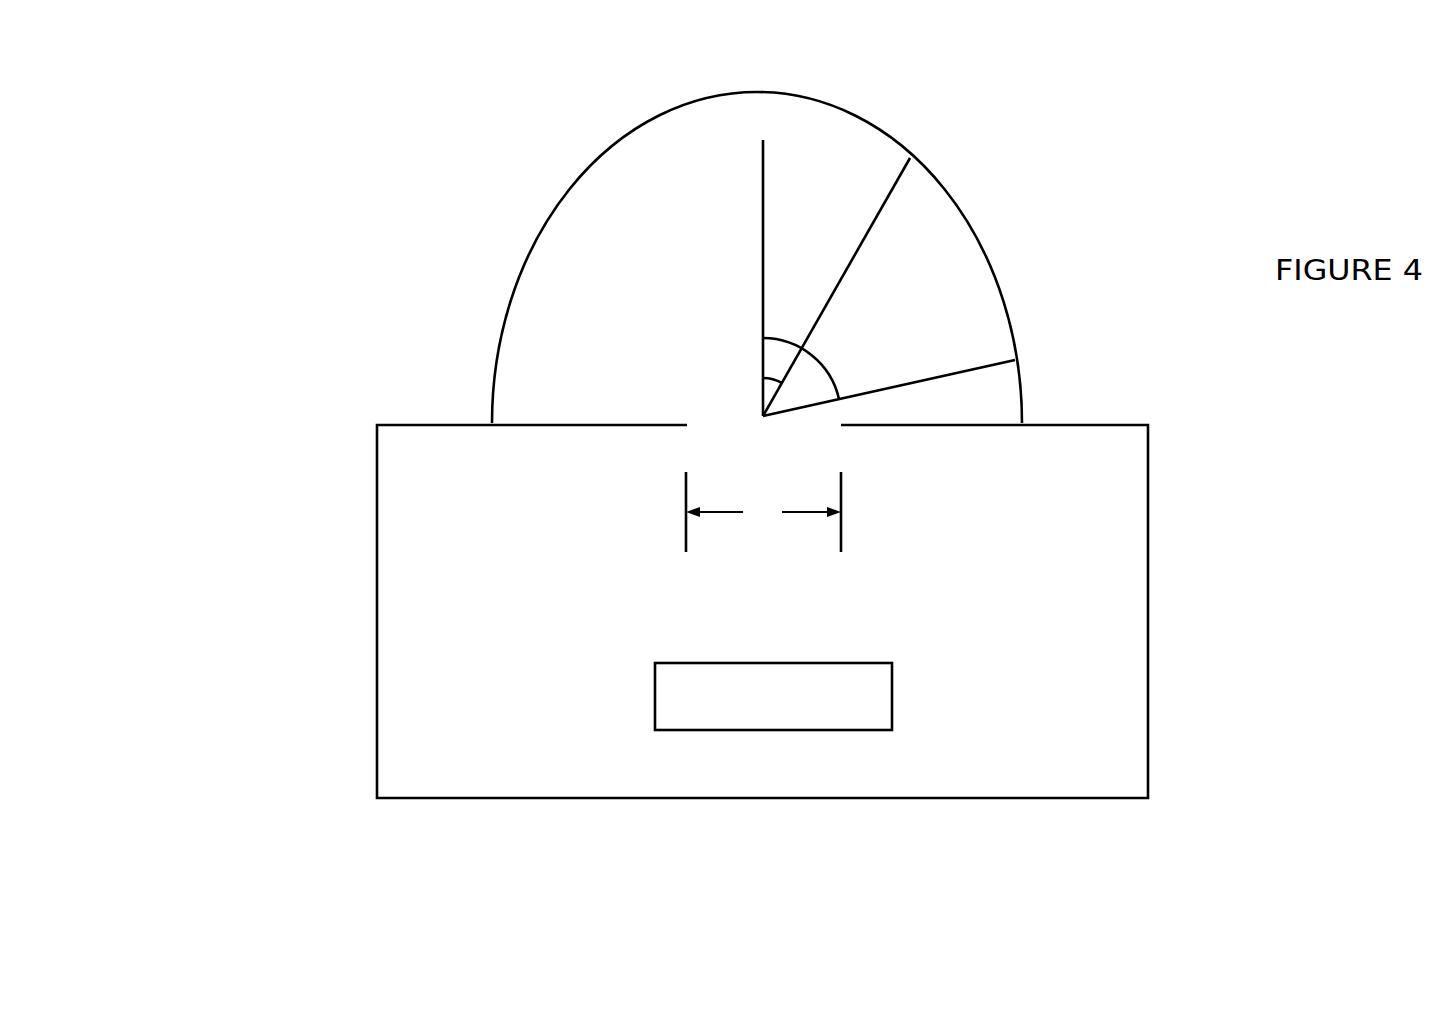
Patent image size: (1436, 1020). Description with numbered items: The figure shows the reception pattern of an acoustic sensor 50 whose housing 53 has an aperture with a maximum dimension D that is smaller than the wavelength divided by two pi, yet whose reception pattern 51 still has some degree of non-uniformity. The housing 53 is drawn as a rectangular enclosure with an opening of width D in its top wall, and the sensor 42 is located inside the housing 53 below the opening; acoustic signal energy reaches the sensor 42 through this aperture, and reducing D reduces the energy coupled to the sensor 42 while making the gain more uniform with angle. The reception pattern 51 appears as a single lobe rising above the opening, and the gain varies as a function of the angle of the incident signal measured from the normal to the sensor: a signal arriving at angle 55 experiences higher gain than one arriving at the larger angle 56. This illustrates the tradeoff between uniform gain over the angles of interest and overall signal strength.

The acoustic sensor 50 is at (206, 219).
The reception pattern 51 is at (977, 245).
The housing 53 is at (1148, 467).
The angle 55 is at (778, 380).
The angle 56 is at (833, 360).
The sensor 42 is at (670, 698).